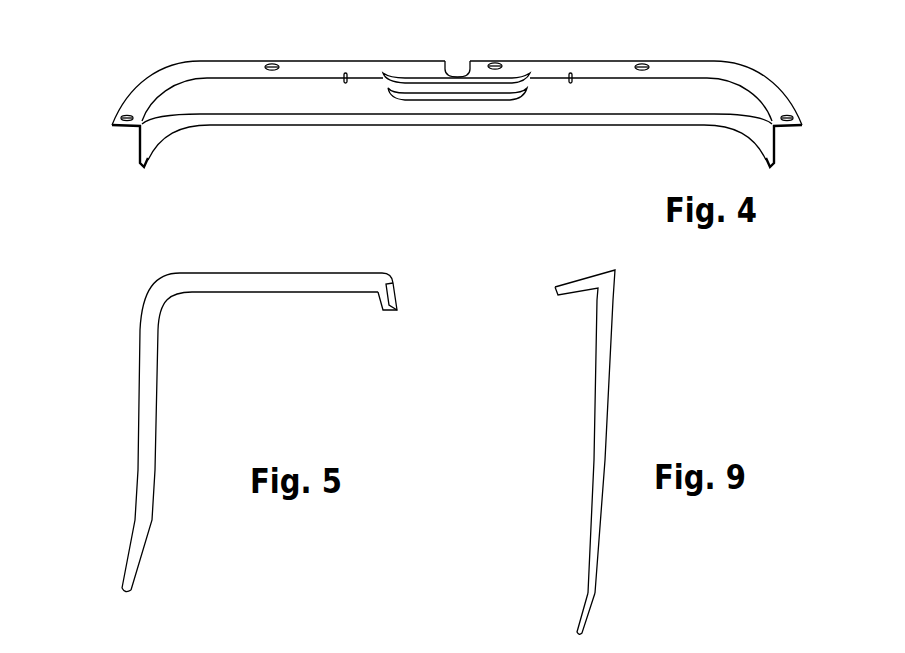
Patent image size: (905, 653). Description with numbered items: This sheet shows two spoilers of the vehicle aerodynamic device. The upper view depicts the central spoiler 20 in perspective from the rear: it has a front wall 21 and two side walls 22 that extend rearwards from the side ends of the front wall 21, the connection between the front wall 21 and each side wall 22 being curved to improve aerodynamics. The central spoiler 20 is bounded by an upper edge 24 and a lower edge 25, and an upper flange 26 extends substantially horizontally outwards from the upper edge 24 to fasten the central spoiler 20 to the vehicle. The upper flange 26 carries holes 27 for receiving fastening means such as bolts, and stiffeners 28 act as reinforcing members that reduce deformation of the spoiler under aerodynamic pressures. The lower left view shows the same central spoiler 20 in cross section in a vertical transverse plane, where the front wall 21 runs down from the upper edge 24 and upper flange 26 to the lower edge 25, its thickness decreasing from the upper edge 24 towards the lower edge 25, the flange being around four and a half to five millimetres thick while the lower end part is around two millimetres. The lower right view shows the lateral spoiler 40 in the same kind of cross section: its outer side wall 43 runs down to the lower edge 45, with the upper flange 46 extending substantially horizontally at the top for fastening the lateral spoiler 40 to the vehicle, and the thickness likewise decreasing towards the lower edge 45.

In FIG. 4, the central spoiler 20 is at (129, 68).
In FIG. 5, the central spoiler 20 is at (285, 372).
In FIG. 4, the front wall 21 is at (232, 103).
In FIG. 5, the front wall 21 is at (147, 392).
In FIG. 4, the side walls 22 is at (143, 142).
In FIG. 4, the upper edge 24 is at (680, 77).
In FIG. 5, the upper edge 24 is at (163, 279).
In FIG. 4, the lower edge 25 is at (607, 125).
In FIG. 5, the lower edge 25 is at (132, 603).
In FIG. 4, the upper flange 26 is at (775, 103).
In FIG. 5, the upper flange 26 is at (303, 283).
In FIG. 4, the holes 27 is at (274, 63).
In FIG. 4, the stiffeners 28 is at (347, 73).
In FIG. 9, the lateral spoiler 40 is at (558, 438).
In FIG. 9, the outer side wall 43 is at (600, 408).
In FIG. 9, the lower edge 45 is at (573, 643).
In FIG. 9, the upper flange 46 is at (575, 285).